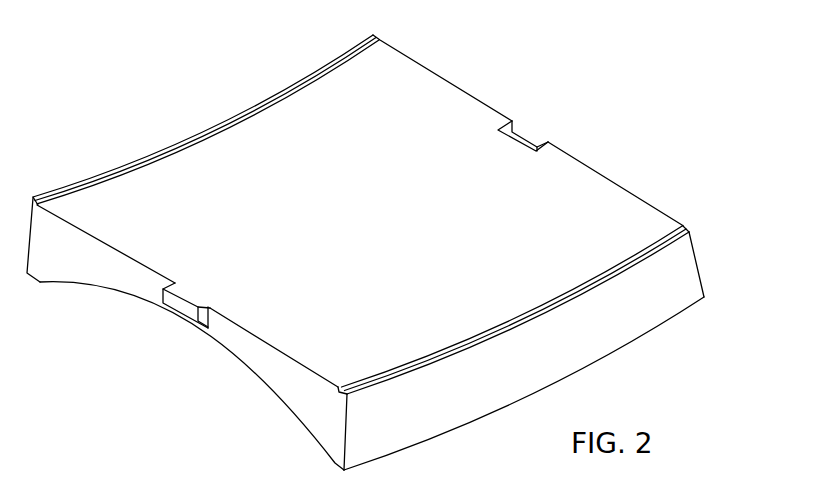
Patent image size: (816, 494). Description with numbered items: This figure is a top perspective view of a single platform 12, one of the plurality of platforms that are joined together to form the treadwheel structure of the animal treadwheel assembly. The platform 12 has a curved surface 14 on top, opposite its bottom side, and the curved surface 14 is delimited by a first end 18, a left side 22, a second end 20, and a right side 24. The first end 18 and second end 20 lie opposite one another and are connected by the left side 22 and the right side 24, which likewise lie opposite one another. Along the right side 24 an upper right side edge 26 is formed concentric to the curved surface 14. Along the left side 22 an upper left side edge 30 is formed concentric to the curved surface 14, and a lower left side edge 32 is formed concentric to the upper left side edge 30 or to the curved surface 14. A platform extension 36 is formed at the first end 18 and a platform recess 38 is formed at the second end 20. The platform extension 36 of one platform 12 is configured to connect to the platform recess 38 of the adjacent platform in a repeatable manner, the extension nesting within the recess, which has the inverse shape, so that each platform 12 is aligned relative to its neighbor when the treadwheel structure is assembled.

The platform 12 is at (56, 66).
The curved surface 14 is at (394, 133).
The first end 18 is at (267, 365).
The second end 20 is at (626, 188).
The left side 22 is at (636, 312).
The right side 24 is at (245, 110).
The upper right side edge 26 is at (290, 90).
The upper left side edge 30 is at (667, 245).
The lower left side edge 32 is at (689, 307).
The platform extension 36 is at (183, 307).
The platform recess 38 is at (531, 141).